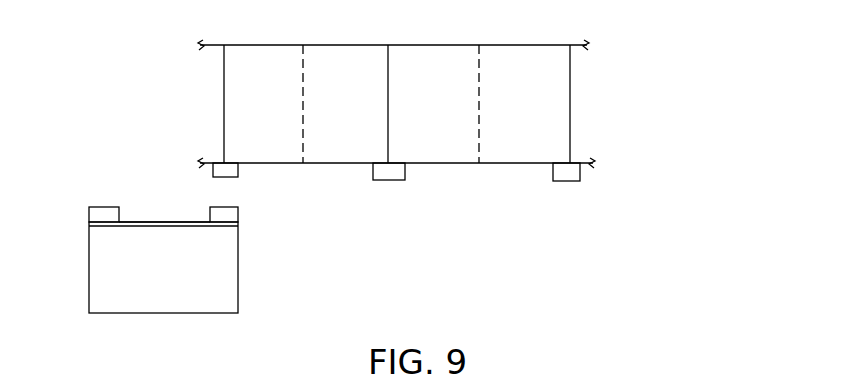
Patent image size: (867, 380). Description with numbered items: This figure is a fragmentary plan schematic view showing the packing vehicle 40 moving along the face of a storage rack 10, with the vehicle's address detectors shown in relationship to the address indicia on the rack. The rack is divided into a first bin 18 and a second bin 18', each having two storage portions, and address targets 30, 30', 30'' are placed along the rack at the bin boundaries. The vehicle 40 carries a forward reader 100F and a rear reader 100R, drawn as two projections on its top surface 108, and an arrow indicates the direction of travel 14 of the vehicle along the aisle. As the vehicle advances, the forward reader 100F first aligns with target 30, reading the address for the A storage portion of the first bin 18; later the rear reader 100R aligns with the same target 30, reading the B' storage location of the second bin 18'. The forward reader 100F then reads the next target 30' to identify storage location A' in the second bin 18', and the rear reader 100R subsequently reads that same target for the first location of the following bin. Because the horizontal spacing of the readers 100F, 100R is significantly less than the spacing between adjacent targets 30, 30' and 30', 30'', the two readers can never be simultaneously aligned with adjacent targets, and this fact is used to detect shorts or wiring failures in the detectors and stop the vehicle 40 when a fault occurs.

The storage rack 10 is at (604, 83).
The direction of web travel 14 is at (512, 265).
The first bin 18 is at (357, 34).
The second bin 18' is at (530, 39).
The target 30 is at (259, 186).
The target 30' is at (407, 192).
The target 30'' is at (595, 198).
The packing vehicle 40 is at (198, 315).
The rear reader 100R is at (97, 208).
The forward reader 100F is at (313, 267).
The top wall of duct 108 is at (175, 222).